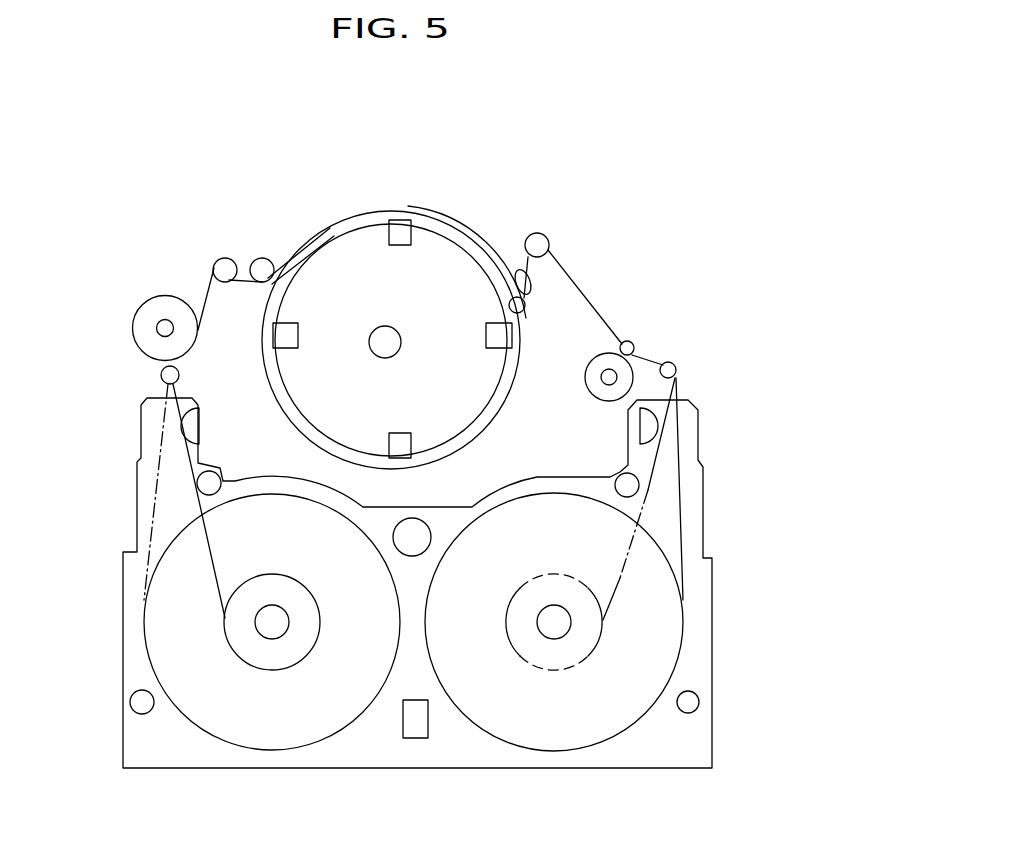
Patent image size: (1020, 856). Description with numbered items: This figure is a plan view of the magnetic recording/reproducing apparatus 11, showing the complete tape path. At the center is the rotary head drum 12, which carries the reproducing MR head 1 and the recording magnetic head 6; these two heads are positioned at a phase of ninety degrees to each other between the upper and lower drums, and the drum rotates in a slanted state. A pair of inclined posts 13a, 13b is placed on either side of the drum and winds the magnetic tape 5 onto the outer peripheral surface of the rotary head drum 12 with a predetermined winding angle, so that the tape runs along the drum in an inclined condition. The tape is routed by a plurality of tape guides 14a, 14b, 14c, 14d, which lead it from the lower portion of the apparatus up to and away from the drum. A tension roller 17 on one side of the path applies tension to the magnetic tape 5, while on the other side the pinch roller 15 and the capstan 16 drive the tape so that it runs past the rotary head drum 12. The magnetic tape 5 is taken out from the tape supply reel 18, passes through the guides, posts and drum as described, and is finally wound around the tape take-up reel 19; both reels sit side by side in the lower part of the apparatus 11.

The magnetic recording/reproducing apparatus 11 is at (198, 190).
The rotary head drum 12 is at (342, 248).
The MR head 1 is at (402, 218).
The recording magnetic head 6 is at (283, 343).
The inclined post 13a is at (260, 262).
The inclined post 13b is at (518, 275).
The tape guide 14a is at (225, 262).
The tape guide 14b is at (163, 377).
The tape guide 14c is at (548, 240).
The tape guide 14d is at (675, 365).
The pinch roller 15 is at (632, 342).
The capstan 16 is at (610, 392).
The tension roller 17 is at (140, 320).
The tape supply reel 18 is at (270, 662).
The tape take-up reel 19 is at (562, 752).
The magnetic tape 5 is at (187, 472).